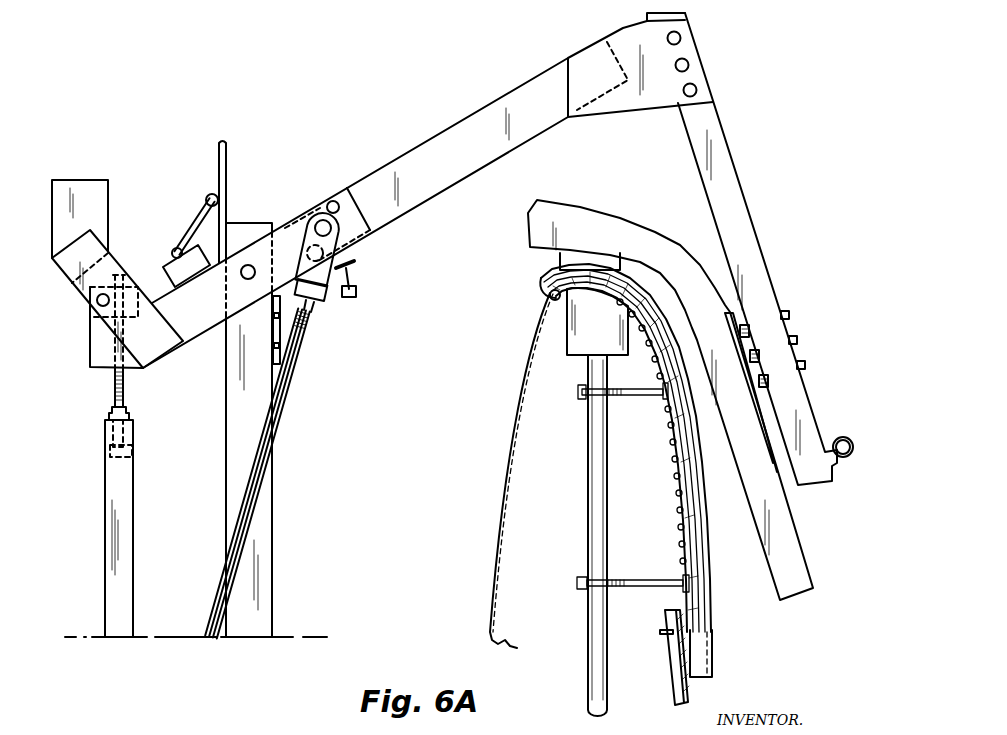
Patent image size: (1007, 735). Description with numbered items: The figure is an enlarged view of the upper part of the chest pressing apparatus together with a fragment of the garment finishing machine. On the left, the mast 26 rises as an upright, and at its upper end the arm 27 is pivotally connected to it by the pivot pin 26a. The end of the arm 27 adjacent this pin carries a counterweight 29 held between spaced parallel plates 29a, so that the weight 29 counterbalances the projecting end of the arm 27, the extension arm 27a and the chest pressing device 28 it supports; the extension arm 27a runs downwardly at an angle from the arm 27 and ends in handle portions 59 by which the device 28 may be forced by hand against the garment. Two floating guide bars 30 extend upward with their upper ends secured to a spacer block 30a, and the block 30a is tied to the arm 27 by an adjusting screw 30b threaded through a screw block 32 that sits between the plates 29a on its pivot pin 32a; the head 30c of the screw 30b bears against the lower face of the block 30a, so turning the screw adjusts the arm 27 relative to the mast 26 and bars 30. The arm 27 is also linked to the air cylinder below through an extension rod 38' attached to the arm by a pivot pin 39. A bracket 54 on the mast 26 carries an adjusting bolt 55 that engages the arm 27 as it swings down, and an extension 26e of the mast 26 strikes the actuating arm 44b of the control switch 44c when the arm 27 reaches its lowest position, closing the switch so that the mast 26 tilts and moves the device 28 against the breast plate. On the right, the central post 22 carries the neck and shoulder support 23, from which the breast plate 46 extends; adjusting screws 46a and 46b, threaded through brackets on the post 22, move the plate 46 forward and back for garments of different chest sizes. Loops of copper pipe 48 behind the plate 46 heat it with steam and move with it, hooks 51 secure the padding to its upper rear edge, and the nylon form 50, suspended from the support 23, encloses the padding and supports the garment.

The central post 22 is at (576, 535).
The neck and shoulder support 23 is at (562, 321).
The mast 26 is at (270, 430).
The pivot pin 26a is at (253, 240).
The extension 26e is at (249, 202).
The arm 27 is at (428, 190).
The extension arm 27a is at (757, 249).
The chest pressing device 28 is at (686, 395).
The counterweight 29 is at (80, 203).
The plates 29a is at (117, 299).
The floating guide bars 30 is at (142, 528).
The spacer block 30a is at (150, 434).
The adjusting screw 30b is at (144, 394).
The head 30c is at (146, 463).
The screw block 32 is at (173, 266).
The pivot pin 32a is at (95, 321).
The extension rod 38' is at (275, 459).
The pivot pin 39 is at (327, 233).
The actuating arm 44b is at (187, 218).
The control switch 44c is at (160, 237).
The breast plate 46 is at (651, 431).
The adjusting screw 46a is at (623, 407).
The adjusting screw 46b is at (633, 573).
The loops of copper pipe 48 is at (625, 448).
The nylon bag or form 50 is at (600, 499).
The hooks 51 is at (528, 301).
The bracket 54 is at (365, 273).
The adjusting bolt 55 is at (368, 296).
The handle portions 59 is at (840, 428).